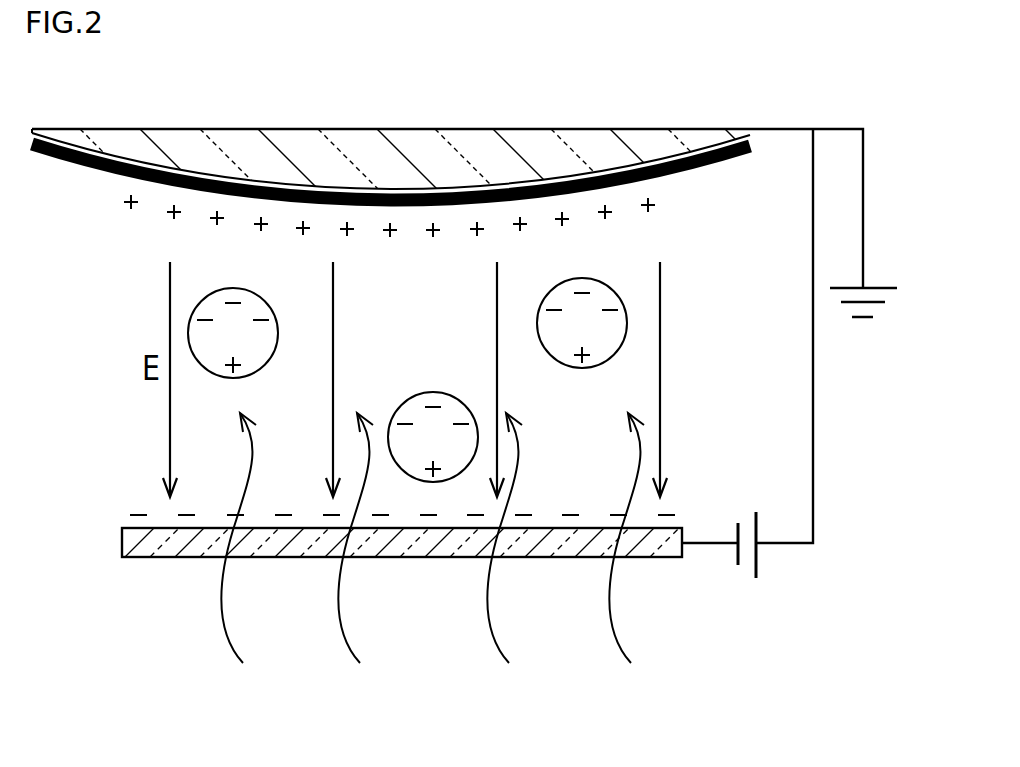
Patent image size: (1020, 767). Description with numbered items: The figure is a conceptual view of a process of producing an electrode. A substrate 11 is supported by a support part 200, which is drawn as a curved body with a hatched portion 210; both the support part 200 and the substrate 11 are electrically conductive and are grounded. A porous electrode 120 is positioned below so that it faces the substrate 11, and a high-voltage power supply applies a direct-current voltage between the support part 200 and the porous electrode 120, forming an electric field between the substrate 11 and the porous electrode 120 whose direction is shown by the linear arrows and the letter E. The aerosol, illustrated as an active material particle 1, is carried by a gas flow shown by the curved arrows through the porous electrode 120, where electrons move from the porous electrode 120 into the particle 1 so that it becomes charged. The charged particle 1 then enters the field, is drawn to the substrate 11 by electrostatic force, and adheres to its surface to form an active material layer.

The support part 200 is at (423, 137).
The dielectric layer 210 is at (398, 128).
The substrate 11 is at (681, 174).
The active material particle 1 is at (263, 294).
The porous electrode 120 is at (122, 558).